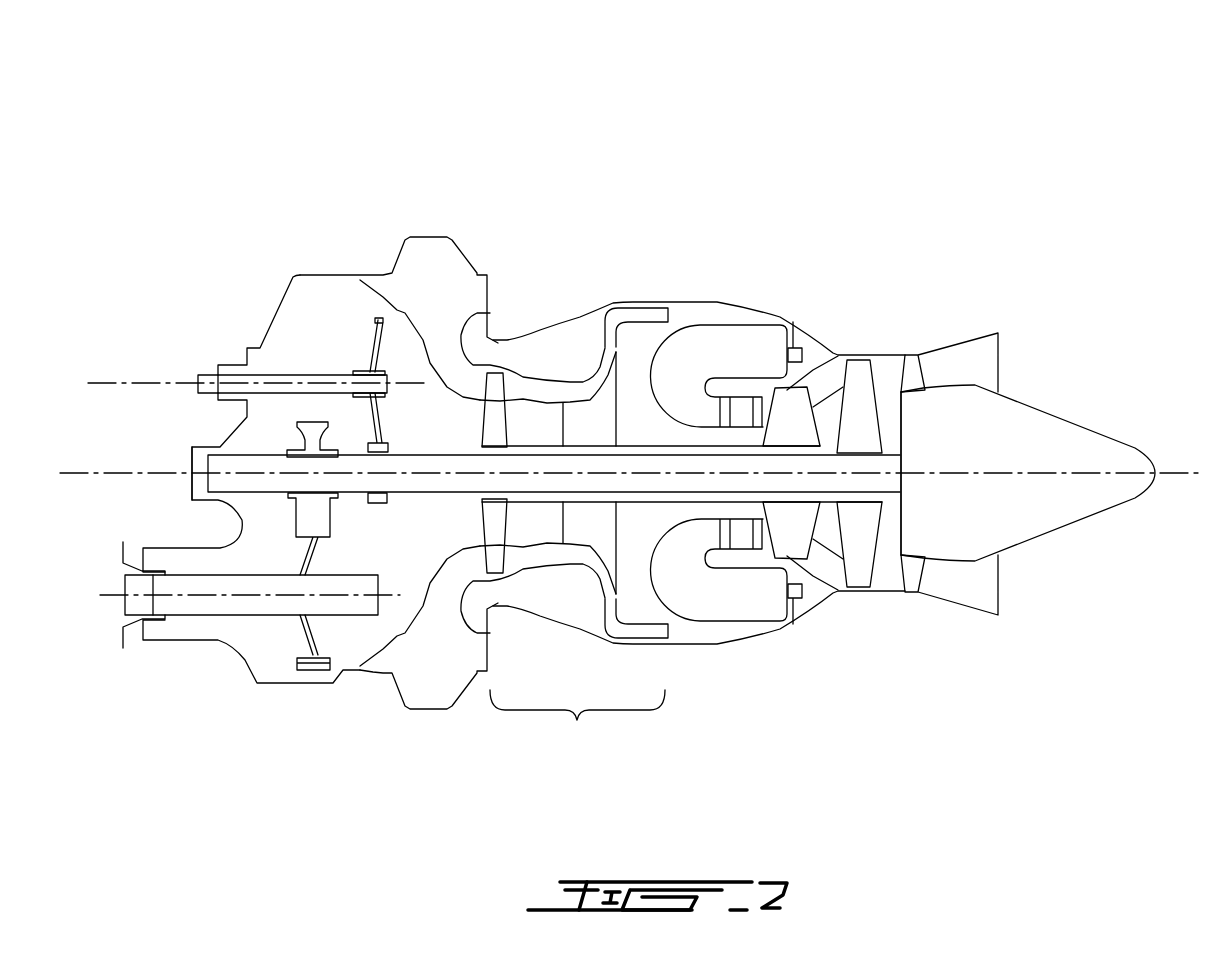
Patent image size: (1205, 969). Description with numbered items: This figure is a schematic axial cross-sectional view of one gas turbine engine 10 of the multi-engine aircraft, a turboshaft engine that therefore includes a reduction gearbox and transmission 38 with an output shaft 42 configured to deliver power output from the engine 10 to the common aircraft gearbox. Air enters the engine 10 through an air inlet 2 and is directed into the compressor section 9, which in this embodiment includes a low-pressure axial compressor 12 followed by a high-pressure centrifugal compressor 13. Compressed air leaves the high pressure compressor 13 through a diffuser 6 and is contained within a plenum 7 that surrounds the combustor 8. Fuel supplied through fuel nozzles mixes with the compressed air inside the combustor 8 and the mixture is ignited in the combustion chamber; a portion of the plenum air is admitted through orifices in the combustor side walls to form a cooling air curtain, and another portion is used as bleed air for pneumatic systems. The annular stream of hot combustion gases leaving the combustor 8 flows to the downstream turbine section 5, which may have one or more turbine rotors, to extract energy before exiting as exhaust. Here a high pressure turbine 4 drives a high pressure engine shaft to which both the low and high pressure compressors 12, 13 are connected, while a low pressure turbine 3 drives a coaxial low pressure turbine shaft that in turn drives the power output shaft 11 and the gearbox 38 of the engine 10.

The gas turbine engine 10 is at (870, 152).
The air inlet 2 is at (432, 713).
The low pressure turbine 3 is at (857, 568).
The high pressure turbine 4 is at (783, 532).
The turbine section 5 is at (823, 556).
The diffuser 6 is at (638, 317).
The plenum 7 is at (708, 632).
The combustor 8 is at (724, 345).
The compressor section 9 is at (577, 725).
The power output shaft 11 is at (415, 453).
The low-pressure axial compressor 12 is at (495, 385).
The high-pressure centrifugal compressor 13 is at (590, 420).
The reduction gearbox and transmission 38 is at (322, 338).
The output shaft 42 is at (183, 603).